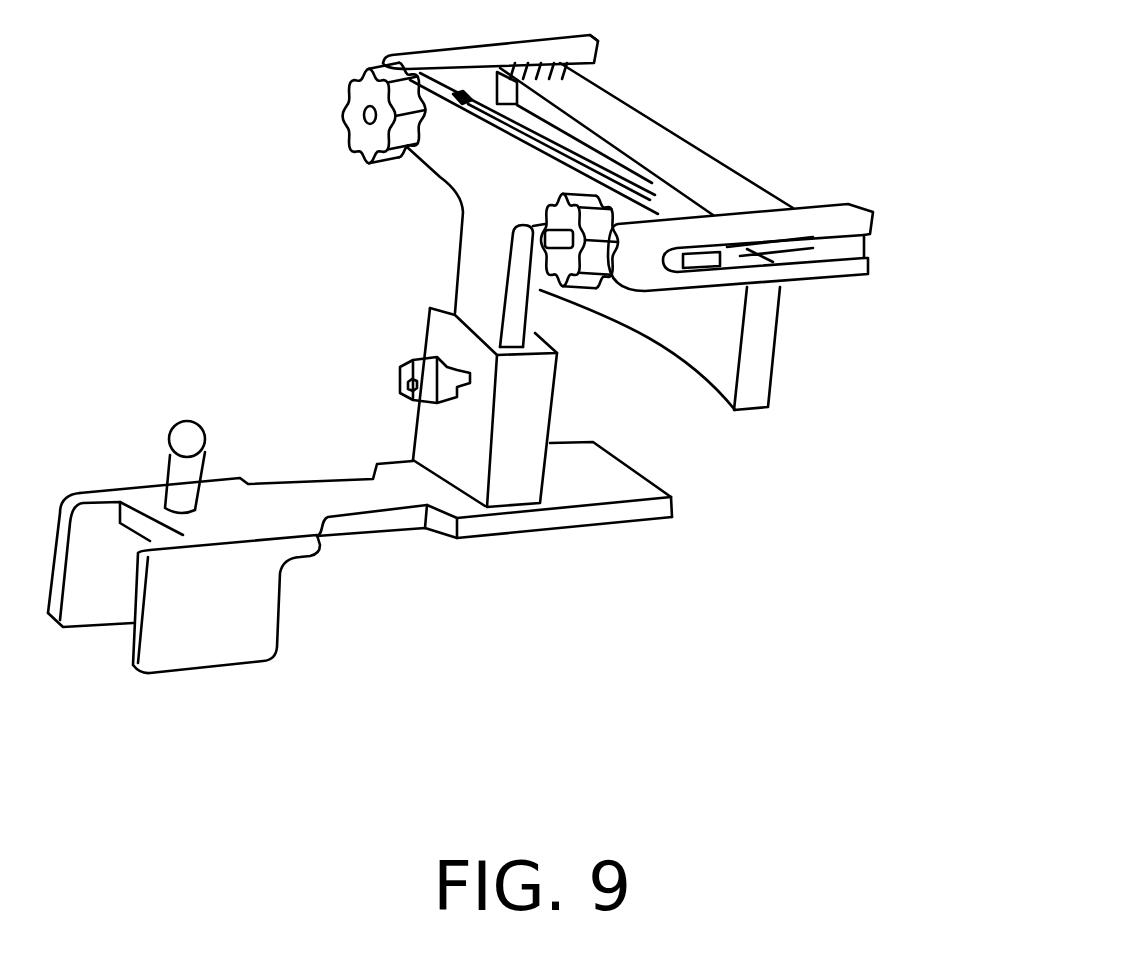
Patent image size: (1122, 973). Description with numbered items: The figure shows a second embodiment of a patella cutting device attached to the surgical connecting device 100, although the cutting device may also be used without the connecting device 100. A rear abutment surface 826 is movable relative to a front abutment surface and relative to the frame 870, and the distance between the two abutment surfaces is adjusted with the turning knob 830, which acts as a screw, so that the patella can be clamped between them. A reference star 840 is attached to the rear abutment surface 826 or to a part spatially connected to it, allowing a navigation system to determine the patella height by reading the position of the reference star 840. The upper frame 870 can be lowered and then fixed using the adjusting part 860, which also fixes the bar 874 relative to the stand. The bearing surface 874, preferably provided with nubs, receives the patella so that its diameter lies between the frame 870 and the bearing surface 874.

The connecting device 100 is at (293, 627).
The rear abutment surface 826 is at (703, 350).
The turning knob 830 is at (357, 92).
The reference star 840 is at (540, 223).
The adjusting part 860 is at (400, 388).
The frame 870 is at (813, 213).
The bearing surface 874 is at (680, 160).